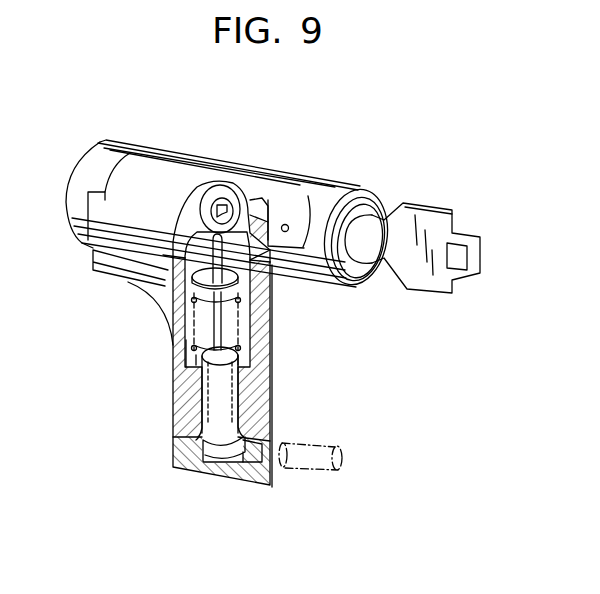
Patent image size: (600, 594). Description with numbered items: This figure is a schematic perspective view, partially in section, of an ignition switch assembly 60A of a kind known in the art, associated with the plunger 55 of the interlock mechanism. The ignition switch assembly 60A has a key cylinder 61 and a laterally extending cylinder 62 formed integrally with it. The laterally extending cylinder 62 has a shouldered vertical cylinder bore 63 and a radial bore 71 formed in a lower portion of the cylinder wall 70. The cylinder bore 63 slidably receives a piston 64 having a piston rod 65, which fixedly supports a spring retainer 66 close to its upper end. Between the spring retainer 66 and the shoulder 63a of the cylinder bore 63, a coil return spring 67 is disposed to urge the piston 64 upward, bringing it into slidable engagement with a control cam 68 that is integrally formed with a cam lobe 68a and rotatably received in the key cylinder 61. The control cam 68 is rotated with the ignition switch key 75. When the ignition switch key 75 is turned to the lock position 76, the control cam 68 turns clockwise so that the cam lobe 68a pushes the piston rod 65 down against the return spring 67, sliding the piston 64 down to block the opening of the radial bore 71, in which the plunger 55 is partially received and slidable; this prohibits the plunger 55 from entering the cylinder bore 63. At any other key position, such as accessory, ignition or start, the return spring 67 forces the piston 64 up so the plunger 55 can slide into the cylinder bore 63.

The ignition switch assembly 60A is at (303, 165).
The key cylinder 61 is at (150, 160).
The laterally extending cylinder 62 is at (170, 342).
The cylinder bore 63 is at (268, 322).
The shoulder 63a is at (270, 378).
The piston 64 is at (213, 390).
The piston rod 65 is at (177, 352).
The spring retainer 66 is at (240, 282).
The return spring 67 is at (188, 318).
The control cam 68 is at (212, 186).
The cam lobe 68a is at (250, 198).
The cylinder wall 70 is at (270, 360).
The radial bore 71 is at (257, 450).
The ignition switch key 75 is at (433, 217).
The lock position 76 is at (333, 270).
The plunger 55 is at (335, 447).